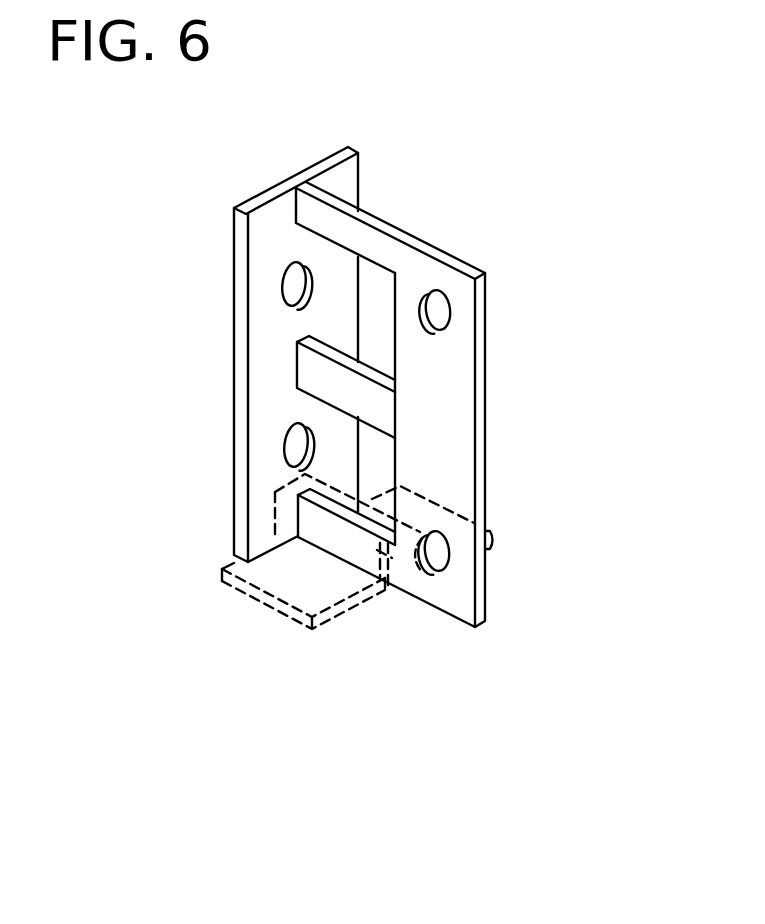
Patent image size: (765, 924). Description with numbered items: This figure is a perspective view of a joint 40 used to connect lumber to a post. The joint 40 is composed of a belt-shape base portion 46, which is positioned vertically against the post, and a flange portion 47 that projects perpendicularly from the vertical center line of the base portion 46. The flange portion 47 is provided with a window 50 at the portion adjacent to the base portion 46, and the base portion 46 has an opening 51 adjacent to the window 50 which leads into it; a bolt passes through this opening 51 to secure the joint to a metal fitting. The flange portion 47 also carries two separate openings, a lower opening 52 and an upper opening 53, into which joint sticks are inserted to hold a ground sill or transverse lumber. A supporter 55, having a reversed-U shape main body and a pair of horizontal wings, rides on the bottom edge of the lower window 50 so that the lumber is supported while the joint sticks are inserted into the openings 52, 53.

The joint 40 is at (207, 422).
The belt-shape base portion 46 is at (280, 192).
The flange portion 47 is at (415, 246).
The window 50 is at (372, 285).
The opening 51 is at (290, 283).
The opening 52 is at (445, 557).
The upper opening 53 is at (437, 310).
The supporter 55 is at (285, 585).